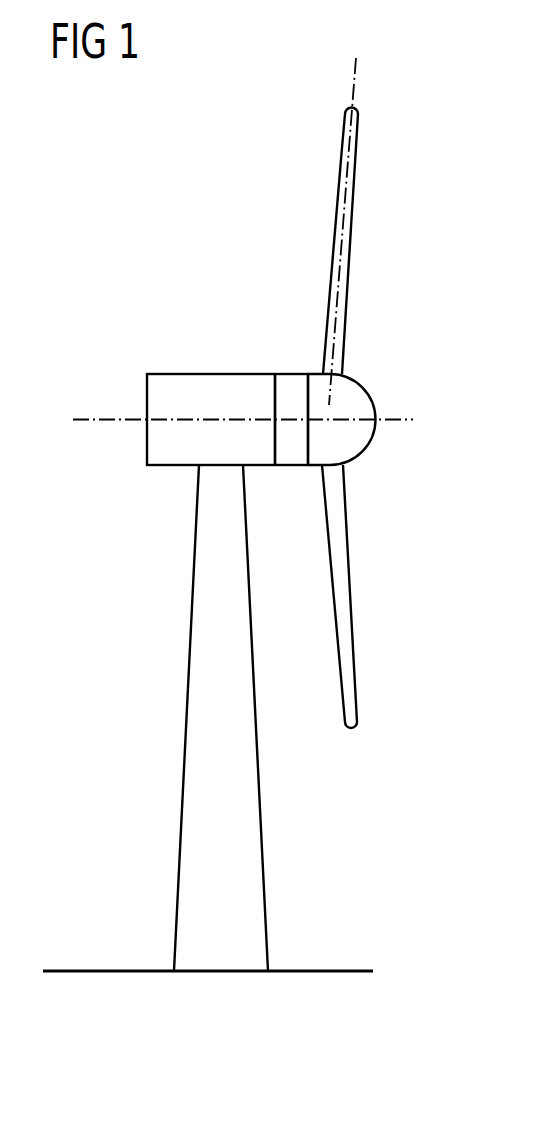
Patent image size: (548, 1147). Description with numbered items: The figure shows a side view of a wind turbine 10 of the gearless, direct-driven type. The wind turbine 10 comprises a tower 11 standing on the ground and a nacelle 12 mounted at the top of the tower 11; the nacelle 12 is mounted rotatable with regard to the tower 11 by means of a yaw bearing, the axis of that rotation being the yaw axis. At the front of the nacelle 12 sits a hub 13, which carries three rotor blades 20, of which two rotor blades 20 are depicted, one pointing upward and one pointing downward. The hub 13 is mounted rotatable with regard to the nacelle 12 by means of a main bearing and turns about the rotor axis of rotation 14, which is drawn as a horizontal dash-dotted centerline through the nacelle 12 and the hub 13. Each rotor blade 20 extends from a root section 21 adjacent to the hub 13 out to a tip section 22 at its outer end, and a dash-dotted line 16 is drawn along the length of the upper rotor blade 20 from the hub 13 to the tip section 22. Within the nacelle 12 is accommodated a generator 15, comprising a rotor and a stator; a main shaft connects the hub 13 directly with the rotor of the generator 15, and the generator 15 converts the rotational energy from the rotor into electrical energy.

The wind turbine 10 is at (119, 606).
The tower 11 is at (242, 803).
The nacelle 12 is at (198, 372).
The hub 13 is at (368, 397).
The rotor axis of rotation 14 is at (90, 418).
The generator 15 is at (295, 453).
The blade pitch axis 16 is at (355, 73).
The rotor blade 20 is at (347, 238).
The root section 21 is at (345, 343).
The tip section 22 is at (358, 123).